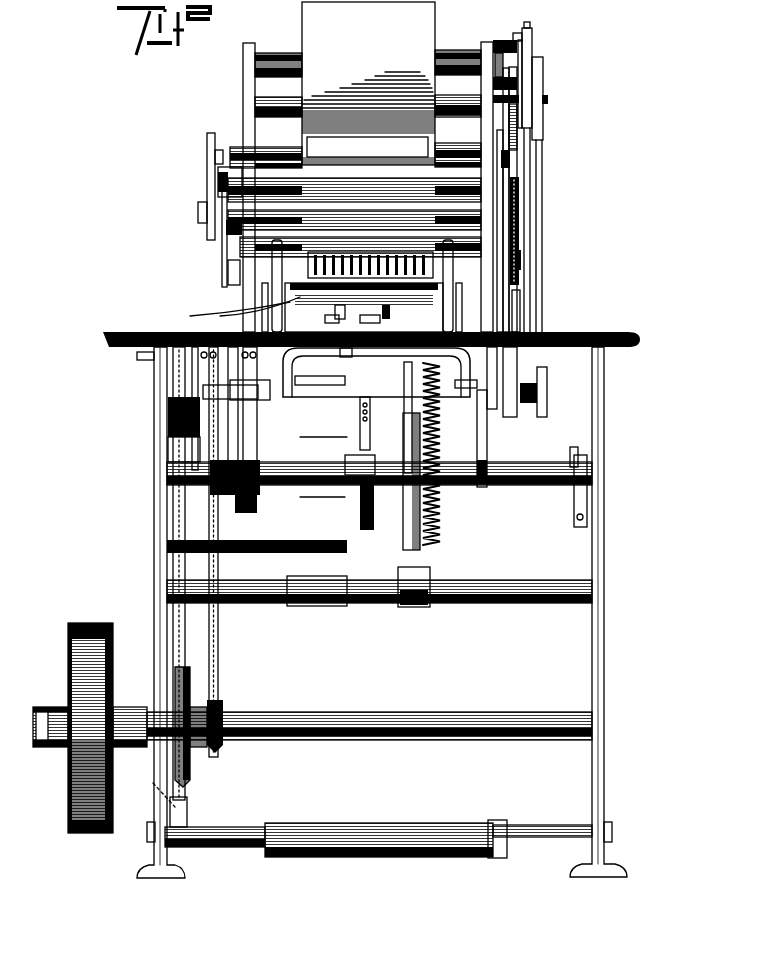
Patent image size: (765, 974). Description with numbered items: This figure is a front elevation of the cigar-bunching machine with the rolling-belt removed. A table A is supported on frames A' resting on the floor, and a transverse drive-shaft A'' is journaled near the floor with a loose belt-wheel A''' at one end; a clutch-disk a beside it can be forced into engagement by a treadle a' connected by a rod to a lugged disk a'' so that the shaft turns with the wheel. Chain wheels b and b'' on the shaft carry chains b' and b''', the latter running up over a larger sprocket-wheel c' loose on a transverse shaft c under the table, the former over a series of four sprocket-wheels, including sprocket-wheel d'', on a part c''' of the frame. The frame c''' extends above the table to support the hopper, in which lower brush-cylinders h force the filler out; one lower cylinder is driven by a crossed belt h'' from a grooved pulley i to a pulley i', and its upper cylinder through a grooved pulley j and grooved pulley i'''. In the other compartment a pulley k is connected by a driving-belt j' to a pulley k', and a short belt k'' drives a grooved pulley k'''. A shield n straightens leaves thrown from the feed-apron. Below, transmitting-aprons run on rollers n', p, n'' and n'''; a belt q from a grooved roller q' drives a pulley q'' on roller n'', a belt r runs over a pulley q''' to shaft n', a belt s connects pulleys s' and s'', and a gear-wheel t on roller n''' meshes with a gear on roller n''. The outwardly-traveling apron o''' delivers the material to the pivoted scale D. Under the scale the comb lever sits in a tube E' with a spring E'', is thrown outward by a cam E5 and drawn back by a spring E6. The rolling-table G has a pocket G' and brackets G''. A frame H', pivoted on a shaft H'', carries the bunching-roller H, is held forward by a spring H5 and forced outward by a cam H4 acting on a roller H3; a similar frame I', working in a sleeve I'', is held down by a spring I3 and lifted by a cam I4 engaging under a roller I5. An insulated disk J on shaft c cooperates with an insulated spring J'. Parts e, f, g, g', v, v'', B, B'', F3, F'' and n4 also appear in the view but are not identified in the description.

The table A is at (385, 331).
The frames A' is at (599, 612).
The transverse drive-shaft A'' is at (369, 716).
The loose belt-wheel A''' is at (76, 728).
The clutch-disk a is at (129, 707).
The treadle a' is at (378, 828).
The lugged disk a'' is at (84, 727).
The sprocket or chain wheel b is at (187, 723).
The chain b' is at (164, 573).
The sprocket or chain wheel b'' is at (229, 719).
The chain b''' is at (226, 552).
The transverse shaft c is at (368, 83).
The larger sprocket-wheel c' is at (246, 515).
The frame part c''' is at (392, 267).
The pivoted scale D is at (433, 272).
The sprocket-wheel d'' is at (283, 454).
The block e is at (185, 412).
The block f is at (132, 438).
The rod g is at (194, 408).
The bracket g' is at (195, 363).
The lower brush-cylinder h is at (399, 146).
The belt or cord h'' is at (557, 234).
The grooved pulley i is at (550, 392).
The pulley i' is at (527, 199).
The grooved pulley i''' is at (536, 170).
The grooved pulley j is at (536, 127).
The driving-belt j' is at (534, 310).
The pulley k is at (534, 382).
The pulley k' is at (516, 121).
The short belt k'' is at (534, 87).
The grooved pulley k''' is at (509, 27).
The shield n is at (386, 97).
The roller shaft n' is at (386, 54).
The roller n'' is at (404, 277).
The shaft or roller n''' is at (557, 228).
The roller n4 is at (338, 224).
The outwardly-traveling apron o''' is at (372, 224).
The transverse rollers p is at (276, 155).
The belt q is at (254, 307).
The grooved roller q' is at (260, 396).
The pulley q'' is at (216, 273).
The pulley q''' is at (209, 248).
The belt r is at (222, 248).
The belt s is at (213, 182).
The pulley s' is at (199, 186).
The pulley s'' is at (191, 218).
The gear-wheel t is at (520, 212).
The plate v is at (532, 65).
The plate v'' is at (547, 185).
The rolling-table G is at (364, 307).
The pocket G' is at (349, 304).
The brackets G'' is at (394, 315).
The piece F3 is at (323, 315).
The piece F'' is at (367, 319).
The bunching-roller H is at (233, 310).
The frame H' is at (376, 434).
The transverse shaft H'' is at (320, 379).
The roller H3 is at (322, 495).
The cam H4 is at (323, 436).
The spring H5 is at (257, 536).
The block B is at (345, 353).
The rod B'' is at (357, 423).
The tube E' is at (360, 449).
The cam E5 is at (367, 507).
The spring E6 is at (381, 542).
The spring E'' is at (379, 584).
The frame I' is at (313, 307).
The sleeve I'' is at (398, 417).
The spring I3 is at (422, 505).
The cam I4 is at (477, 445).
The roller I5 is at (459, 397).
The insulated disk J is at (593, 457).
The spring J' is at (596, 491).